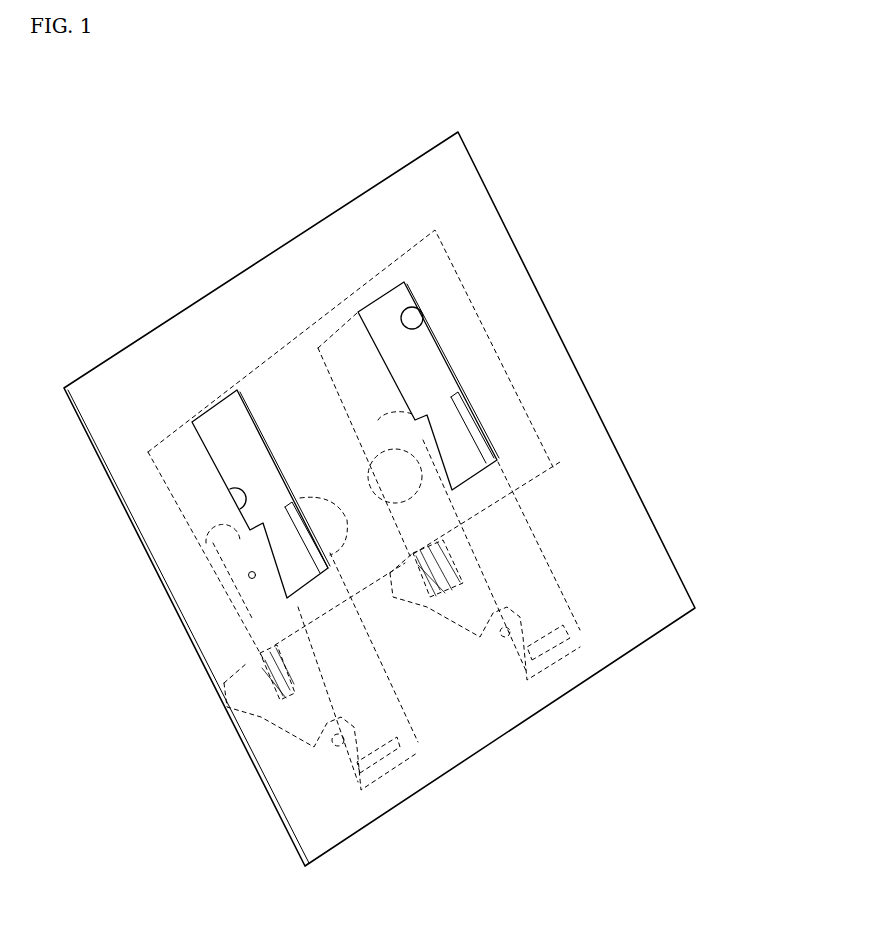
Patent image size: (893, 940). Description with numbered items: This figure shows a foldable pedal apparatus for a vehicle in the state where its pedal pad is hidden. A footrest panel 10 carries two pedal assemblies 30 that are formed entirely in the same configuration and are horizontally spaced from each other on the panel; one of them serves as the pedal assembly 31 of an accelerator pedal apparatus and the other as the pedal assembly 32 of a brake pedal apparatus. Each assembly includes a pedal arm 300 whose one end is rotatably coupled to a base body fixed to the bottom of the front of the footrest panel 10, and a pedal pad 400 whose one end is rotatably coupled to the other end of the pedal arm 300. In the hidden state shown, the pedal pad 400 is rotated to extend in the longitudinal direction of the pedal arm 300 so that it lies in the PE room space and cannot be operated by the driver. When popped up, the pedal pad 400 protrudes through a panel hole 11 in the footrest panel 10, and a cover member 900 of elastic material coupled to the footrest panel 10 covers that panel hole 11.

The footrest panel 10 is at (393, 207).
The panel hole 11 is at (232, 504).
The cover member 900 is at (293, 323).
The pedal pad 400 is at (364, 385).
The pedal arm 300 is at (481, 620).
The pedal assembly 30 is at (481, 620).
The pedal assembly of an accelerator pedal apparatus 31 is at (562, 561).
The pedal assembly of a brake pedal apparatus 32 is at (302, 770).